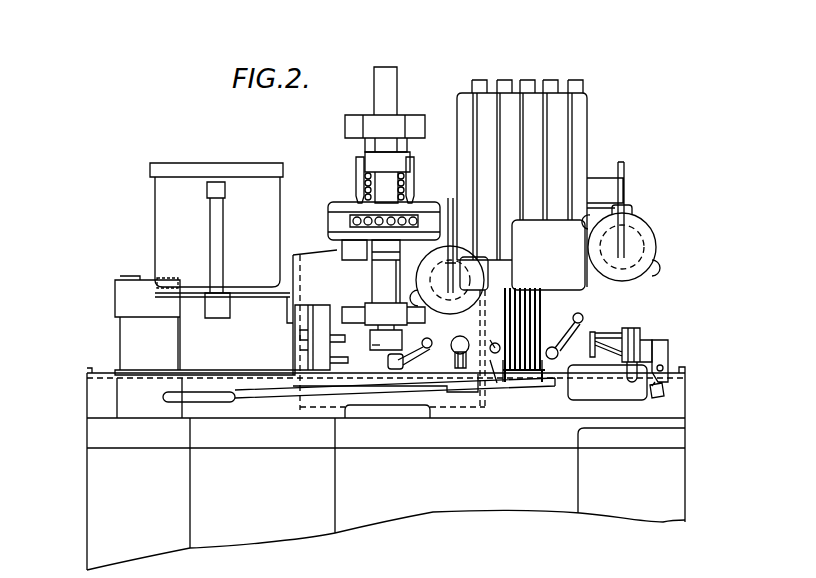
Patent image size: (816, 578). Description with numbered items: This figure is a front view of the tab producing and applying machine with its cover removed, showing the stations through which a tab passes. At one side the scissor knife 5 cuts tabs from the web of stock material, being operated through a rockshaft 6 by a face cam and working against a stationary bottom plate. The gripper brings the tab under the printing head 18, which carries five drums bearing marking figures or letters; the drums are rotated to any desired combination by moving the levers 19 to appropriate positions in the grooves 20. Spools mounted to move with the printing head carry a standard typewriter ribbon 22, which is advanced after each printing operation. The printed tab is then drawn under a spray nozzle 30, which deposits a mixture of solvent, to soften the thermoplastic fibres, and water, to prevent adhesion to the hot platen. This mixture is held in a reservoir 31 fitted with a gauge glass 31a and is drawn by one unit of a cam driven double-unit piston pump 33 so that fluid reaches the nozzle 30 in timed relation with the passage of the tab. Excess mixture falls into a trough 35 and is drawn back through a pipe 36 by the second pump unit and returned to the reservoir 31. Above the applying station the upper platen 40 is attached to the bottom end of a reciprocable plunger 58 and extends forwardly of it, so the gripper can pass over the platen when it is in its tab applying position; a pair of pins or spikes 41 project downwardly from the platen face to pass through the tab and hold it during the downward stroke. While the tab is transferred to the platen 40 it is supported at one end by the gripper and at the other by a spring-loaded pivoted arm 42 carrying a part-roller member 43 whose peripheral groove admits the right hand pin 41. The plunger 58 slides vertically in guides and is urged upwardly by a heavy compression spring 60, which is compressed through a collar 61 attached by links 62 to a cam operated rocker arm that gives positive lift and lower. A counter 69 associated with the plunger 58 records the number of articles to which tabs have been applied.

The scissor knife 5 is at (643, 347).
The rockshaft 6 is at (665, 362).
The printing head 18 is at (527, 289).
The levers 19 is at (575, 88).
The grooves 20 is at (475, 192).
The typewriter ribbon 22 is at (583, 333).
The spray nozzle 30 is at (467, 362).
The reservoir 31 is at (177, 190).
The gauge glass 31a is at (220, 238).
The double-unit piston pump 33 is at (130, 344).
The trough 35 is at (463, 385).
The pipe 36 is at (265, 398).
The platen 40 is at (373, 344).
The pins or spikes 41 is at (380, 358).
The spring-loaded pivoted arm 42 is at (407, 357).
The part-roller member 43 is at (397, 364).
The plunger 58 is at (373, 285).
The compression spring 60 is at (404, 195).
The collar 61 is at (390, 165).
The links 62 is at (358, 177).
The counter 69 is at (355, 217).